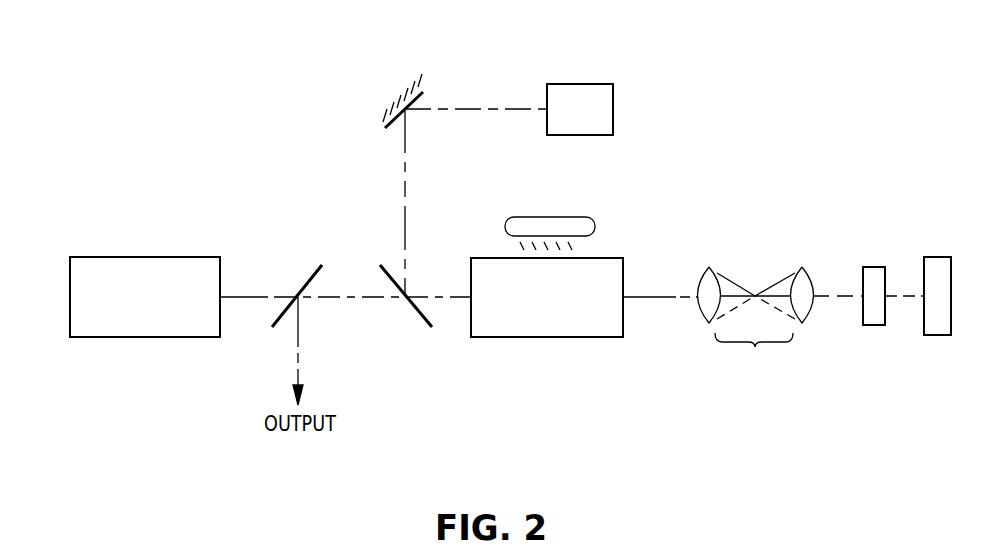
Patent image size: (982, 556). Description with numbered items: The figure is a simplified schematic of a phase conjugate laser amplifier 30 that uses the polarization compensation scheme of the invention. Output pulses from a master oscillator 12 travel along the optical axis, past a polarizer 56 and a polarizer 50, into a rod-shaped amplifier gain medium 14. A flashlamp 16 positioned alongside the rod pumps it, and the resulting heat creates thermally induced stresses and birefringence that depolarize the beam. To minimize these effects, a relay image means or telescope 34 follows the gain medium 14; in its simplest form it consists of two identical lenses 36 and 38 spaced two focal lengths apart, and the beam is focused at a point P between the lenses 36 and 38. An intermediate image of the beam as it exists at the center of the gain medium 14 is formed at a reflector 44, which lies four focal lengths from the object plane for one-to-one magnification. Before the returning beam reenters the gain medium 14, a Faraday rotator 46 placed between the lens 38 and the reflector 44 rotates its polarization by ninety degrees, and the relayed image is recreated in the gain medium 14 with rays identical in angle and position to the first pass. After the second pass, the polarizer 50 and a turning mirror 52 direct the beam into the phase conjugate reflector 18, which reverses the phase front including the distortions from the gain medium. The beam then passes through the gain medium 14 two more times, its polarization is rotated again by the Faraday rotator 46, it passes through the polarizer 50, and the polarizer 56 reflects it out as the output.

The master oscillator 12 is at (160, 257).
The amplifier gain medium 14 is at (553, 337).
The flashlamp 16 is at (594, 217).
The phase conjugate reflector 18 is at (613, 110).
The phase conjugate laser amplifier 30 is at (318, 178).
The telescope 34 is at (754, 356).
The first lens 36 is at (703, 277).
The second lens 38 is at (812, 278).
The reflector 44 is at (940, 257).
The Faraday rotator 46 is at (875, 325).
The polarizer 50 is at (415, 308).
The turning mirror 52 is at (421, 89).
The polarizer 56 is at (305, 286).
The focal point P is at (755, 294).